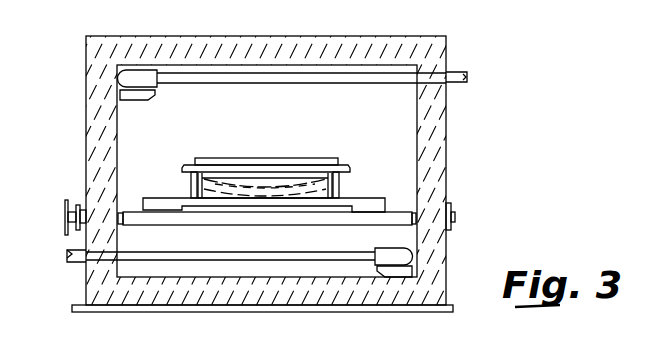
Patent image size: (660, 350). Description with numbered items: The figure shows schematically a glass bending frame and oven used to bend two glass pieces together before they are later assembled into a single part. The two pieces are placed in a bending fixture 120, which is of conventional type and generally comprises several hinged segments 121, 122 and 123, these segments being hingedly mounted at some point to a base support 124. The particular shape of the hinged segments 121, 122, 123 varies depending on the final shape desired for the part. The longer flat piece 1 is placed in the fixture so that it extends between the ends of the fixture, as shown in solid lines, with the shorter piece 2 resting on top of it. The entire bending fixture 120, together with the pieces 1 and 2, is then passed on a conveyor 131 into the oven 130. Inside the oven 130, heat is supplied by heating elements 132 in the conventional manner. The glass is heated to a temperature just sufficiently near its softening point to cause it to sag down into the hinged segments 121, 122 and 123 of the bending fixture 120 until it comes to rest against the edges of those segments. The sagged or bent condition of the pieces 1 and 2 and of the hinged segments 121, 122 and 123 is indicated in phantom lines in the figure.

The oven 130 is at (452, 112).
The heating elements 132 is at (254, 76).
The conveyor 131 is at (266, 217).
The base support 124 is at (372, 203).
The bending fixture 120 is at (241, 178).
The hinged segment 122 is at (270, 178).
The hinged segment 121 is at (188, 178).
The hinged segment 123 is at (353, 173).
The longer flat piece 1 is at (297, 166).
The shorter piece 2 is at (323, 158).